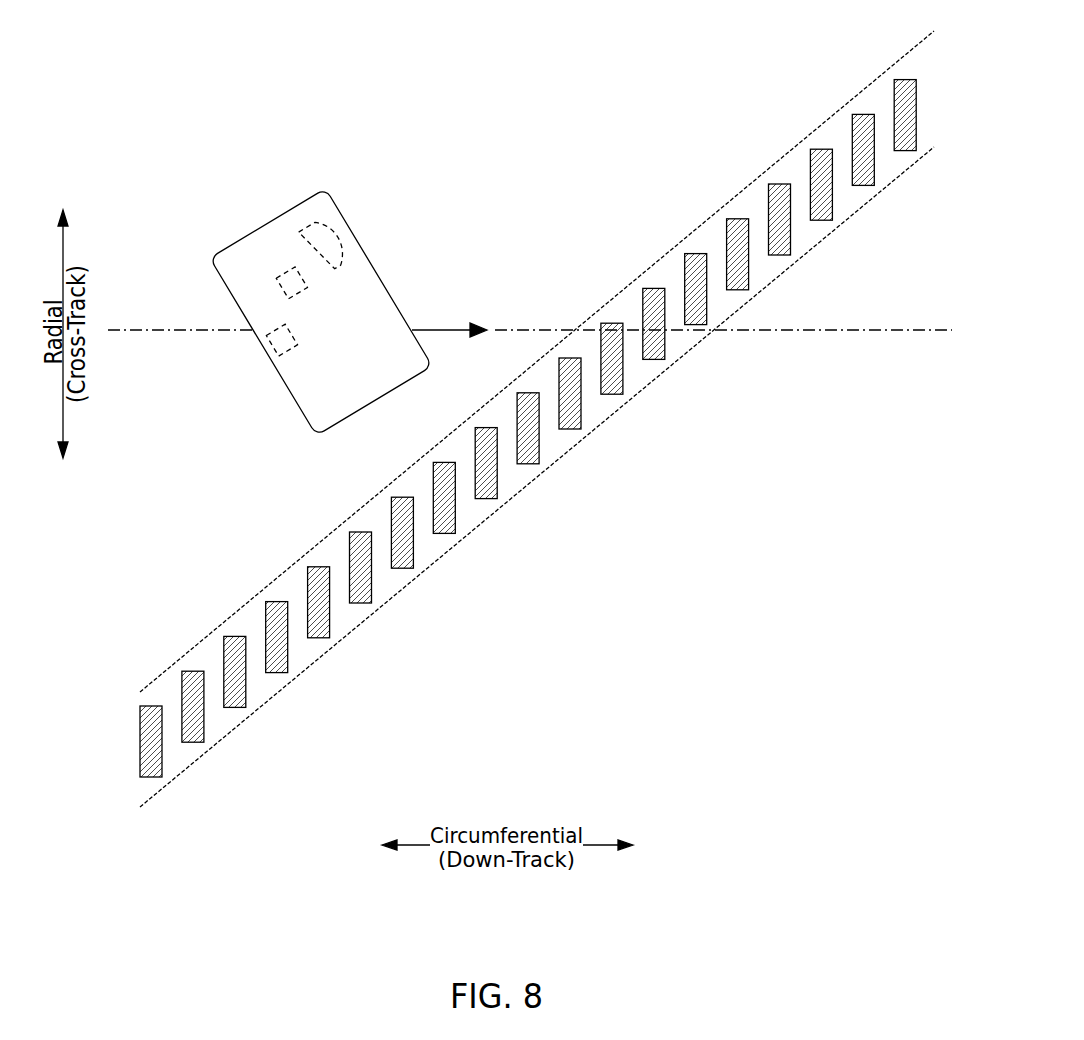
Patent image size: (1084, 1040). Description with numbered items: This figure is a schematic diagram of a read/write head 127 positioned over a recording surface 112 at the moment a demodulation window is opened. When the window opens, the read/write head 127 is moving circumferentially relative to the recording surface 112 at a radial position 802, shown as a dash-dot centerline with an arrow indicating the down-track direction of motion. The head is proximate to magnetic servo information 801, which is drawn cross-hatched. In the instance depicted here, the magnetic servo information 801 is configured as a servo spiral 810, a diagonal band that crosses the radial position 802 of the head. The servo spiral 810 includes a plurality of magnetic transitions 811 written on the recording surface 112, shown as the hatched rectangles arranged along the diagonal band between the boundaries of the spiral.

The recording surface 112 is at (522, 55).
The read/write head 127 is at (248, 200).
The magnetic servo information 801 is at (642, 515).
The radial position 802 is at (870, 326).
The servo spiral 810 is at (813, 132).
The magnetic transitions 811 is at (276, 673).